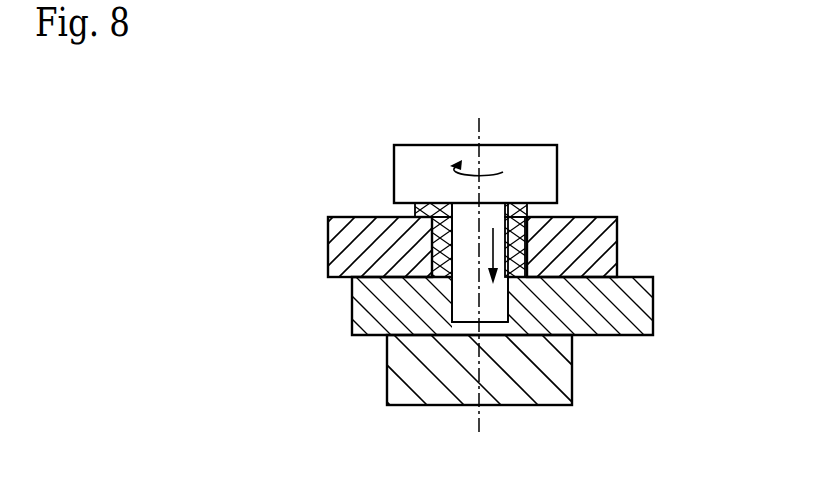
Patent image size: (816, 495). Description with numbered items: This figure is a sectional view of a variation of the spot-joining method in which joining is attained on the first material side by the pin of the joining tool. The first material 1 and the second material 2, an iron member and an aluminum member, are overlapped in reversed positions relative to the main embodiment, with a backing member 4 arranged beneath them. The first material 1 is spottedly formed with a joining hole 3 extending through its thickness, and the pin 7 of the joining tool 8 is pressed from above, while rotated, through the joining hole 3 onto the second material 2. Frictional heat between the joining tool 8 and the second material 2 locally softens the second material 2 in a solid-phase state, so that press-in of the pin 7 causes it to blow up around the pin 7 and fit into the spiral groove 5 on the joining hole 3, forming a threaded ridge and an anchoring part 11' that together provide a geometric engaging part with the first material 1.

The first material 1 is at (600, 243).
The second material 2 is at (657, 308).
The joining hole 3 is at (440, 205).
The backing member 4 is at (408, 388).
The groove 5 is at (500, 372).
The pin 7 is at (467, 293).
The joining tool 8 is at (414, 162).
The anchoring part (engaging part) 11' is at (568, 182).